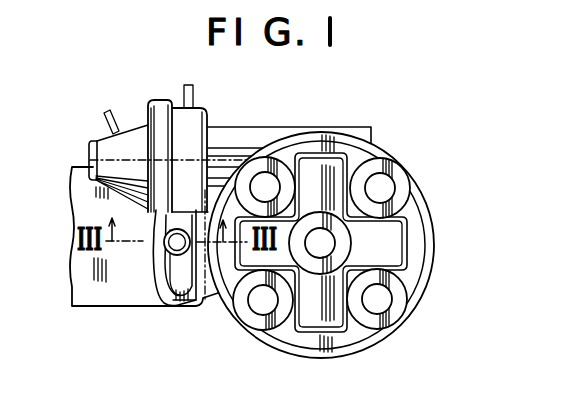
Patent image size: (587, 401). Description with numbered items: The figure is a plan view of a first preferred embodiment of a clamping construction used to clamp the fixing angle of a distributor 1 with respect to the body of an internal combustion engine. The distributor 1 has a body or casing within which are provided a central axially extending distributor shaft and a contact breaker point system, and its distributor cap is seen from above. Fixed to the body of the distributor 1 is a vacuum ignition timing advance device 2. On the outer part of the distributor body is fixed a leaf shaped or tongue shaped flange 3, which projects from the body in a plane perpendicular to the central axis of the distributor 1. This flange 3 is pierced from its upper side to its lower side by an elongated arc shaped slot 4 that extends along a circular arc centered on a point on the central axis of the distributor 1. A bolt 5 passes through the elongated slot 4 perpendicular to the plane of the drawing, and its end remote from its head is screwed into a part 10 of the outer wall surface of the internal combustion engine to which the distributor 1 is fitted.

The distributor 1 is at (432, 212).
The vacuum ignition timing advance device 2 is at (206, 117).
The flange 3 is at (206, 303).
The elongated arc shaped slot 4 is at (175, 270).
The bolt 5 is at (166, 246).
The part of the outer wall surface of the internal combustion engine 10 is at (108, 306).